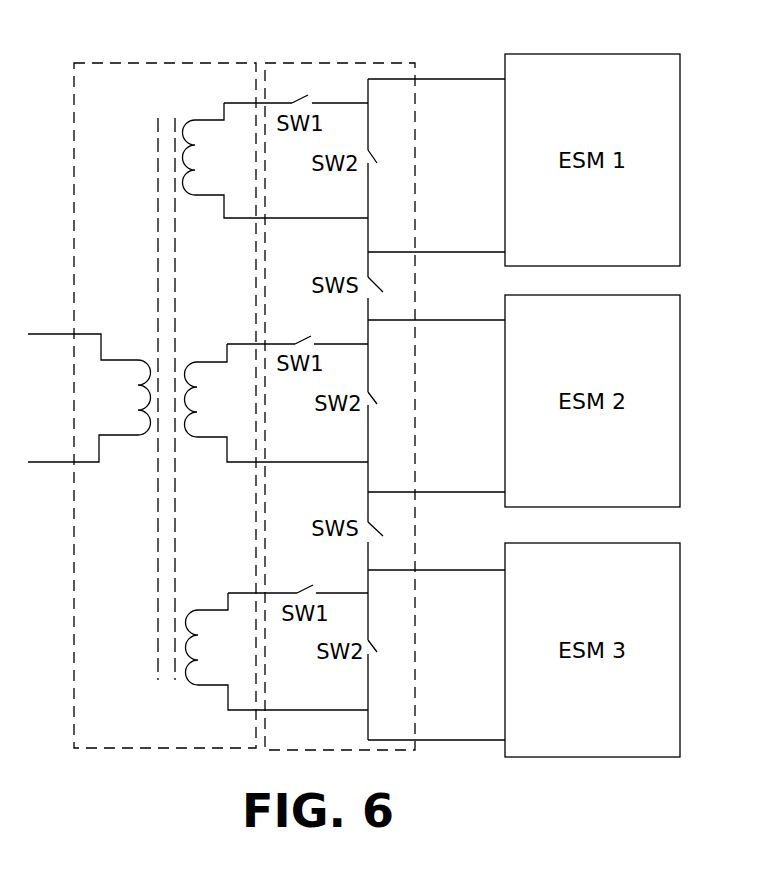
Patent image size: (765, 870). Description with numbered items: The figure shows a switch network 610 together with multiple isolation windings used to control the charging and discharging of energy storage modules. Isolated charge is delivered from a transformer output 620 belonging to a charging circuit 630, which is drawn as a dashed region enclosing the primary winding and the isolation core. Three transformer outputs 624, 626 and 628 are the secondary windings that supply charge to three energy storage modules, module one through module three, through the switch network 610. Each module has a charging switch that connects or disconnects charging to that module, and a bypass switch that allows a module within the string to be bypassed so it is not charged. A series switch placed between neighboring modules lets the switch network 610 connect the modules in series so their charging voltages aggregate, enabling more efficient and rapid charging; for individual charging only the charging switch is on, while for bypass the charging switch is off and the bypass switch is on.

The switch network 610 is at (348, 57).
The transformer output 620 is at (89, 398).
The transformer output 624 is at (276, 160).
The transformer output 626 is at (276, 403).
The transformer output 628 is at (276, 651).
The charging circuit 630 is at (168, 57).